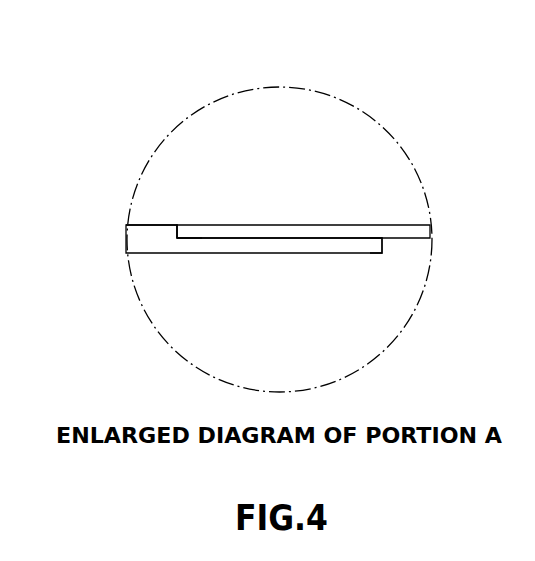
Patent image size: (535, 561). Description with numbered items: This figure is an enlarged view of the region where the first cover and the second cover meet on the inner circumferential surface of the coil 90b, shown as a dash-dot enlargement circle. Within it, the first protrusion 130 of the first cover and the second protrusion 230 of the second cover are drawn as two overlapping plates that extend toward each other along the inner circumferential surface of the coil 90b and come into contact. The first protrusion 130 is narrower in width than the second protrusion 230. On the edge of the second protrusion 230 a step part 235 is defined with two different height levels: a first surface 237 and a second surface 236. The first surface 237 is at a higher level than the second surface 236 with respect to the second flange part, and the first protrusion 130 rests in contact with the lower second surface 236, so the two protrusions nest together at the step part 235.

The coil 90b is at (273, 134).
The first protrusion 130 is at (388, 228).
The second protrusion 230 is at (137, 243).
The step part 235 is at (190, 248).
The second surface 236 is at (188, 223).
The first surface 237 is at (383, 250).